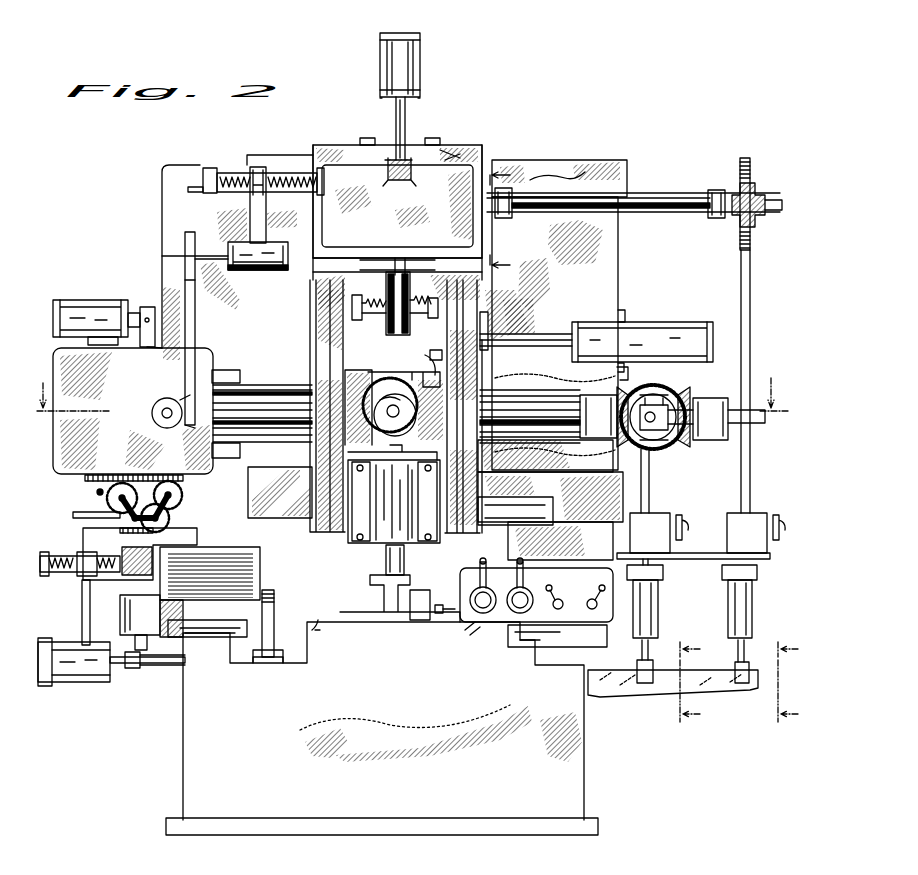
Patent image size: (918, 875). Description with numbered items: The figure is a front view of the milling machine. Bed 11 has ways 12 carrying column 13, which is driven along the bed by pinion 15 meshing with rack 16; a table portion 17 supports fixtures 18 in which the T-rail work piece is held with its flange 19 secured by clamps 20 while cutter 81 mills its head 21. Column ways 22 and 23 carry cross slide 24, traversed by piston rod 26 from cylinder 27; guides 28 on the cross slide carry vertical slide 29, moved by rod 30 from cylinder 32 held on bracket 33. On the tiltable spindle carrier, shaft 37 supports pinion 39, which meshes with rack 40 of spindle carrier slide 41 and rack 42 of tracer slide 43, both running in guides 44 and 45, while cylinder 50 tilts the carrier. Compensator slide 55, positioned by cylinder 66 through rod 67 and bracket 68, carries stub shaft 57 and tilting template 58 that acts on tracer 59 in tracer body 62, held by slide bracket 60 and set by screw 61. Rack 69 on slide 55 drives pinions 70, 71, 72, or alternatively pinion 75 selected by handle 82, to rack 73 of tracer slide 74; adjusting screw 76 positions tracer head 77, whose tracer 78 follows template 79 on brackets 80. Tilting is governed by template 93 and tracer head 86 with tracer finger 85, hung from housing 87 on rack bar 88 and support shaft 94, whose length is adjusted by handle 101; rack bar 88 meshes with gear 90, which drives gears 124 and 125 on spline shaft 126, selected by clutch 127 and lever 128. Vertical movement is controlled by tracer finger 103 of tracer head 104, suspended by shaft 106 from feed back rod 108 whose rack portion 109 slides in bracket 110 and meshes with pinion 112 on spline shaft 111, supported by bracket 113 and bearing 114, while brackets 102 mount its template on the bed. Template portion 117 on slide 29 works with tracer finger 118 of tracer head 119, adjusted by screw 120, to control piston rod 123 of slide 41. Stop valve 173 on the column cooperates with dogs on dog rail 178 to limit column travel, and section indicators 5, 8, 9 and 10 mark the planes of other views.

The section line 5- 5 is at (413, 410).
The section line 8- 8 is at (680, 682).
The section line 9- 9 is at (779, 682).
The section line 10- 10 is at (501, 201).
The bed 11 is at (190, 776).
The ways 12 is at (222, 635).
The column 13 is at (162, 220).
The pinion 15 is at (262, 598).
The rack 16 is at (275, 609).
The table portion 17 is at (320, 617).
The work holding clamps or fixtures 18 is at (412, 591).
The vertically held flange 19 is at (370, 583).
The clamps 20 is at (455, 600).
The cross flange or head 21 is at (380, 546).
The ways 22 is at (585, 162).
The ways 23 is at (252, 508).
The carriage or cross head unit 24 is at (315, 284).
The piston rod 26 is at (546, 334).
The cylinder 27 is at (650, 322).
The vertical guides or ways 28 is at (360, 145).
The vertical slide 29 is at (450, 148).
The rod 30 is at (405, 115).
The cylinder 32 is at (420, 58).
The bracket 33 is at (378, 113).
The shaft 37 is at (395, 415).
The pinion 39 is at (381, 405).
The rack 40 is at (413, 372).
The spindle carrier slide 41 is at (347, 544).
The rack 42 is at (368, 380).
The tracer slide 43 is at (358, 282).
The ways or guides 44 is at (330, 306).
The ways or guides 45 is at (476, 306).
The cylinder 50 is at (560, 485).
The compensator slide 55 is at (208, 350).
The spindle or stub shaft 57 is at (157, 406).
The angularly adjustable template 58 is at (162, 256).
The tracer 59 is at (221, 266).
The slide bracket 60 is at (252, 214).
The screw 61 is at (228, 174).
The tracer body 62 is at (284, 254).
The cylinder 66 is at (107, 297).
The rod 67 is at (135, 310).
The bracket 68 is at (147, 347).
The rack 69 is at (188, 477).
The pinion 70 is at (180, 493).
The pinion 71 is at (168, 517).
The pinion 72 is at (138, 477).
The rack 73 is at (140, 554).
The tracer slide 74 is at (91, 578).
The pinion 75 is at (97, 493).
The adjusting screw 76 is at (70, 580).
The tracer head 77 is at (80, 680).
The tracer 78 is at (127, 671).
The transverse movement control template 79 is at (134, 668).
The brackets 80 is at (168, 668).
The cutter 81 is at (406, 562).
The handle 82 is at (76, 520).
The tracer finger 85 is at (640, 660).
The tracer head 86 is at (658, 596).
The housing 87 is at (735, 534).
The rack bar 88 is at (648, 500).
The gear 90 is at (666, 388).
The template 93 is at (646, 688).
The support shaft 94 is at (648, 566).
The handle 101 is at (744, 582).
The brackets 102 is at (723, 688).
The tracer finger 103 is at (748, 650).
The tracer head 104 is at (756, 604).
The shaft 106 is at (750, 566).
The feed back rod 108 is at (752, 493).
The rack portion 109 is at (752, 166).
The bracket 110 is at (766, 192).
The spline shaft 111 is at (784, 206).
The pinion 112 is at (730, 217).
The bracket 113 is at (714, 188).
The bearing 114 is at (506, 212).
The template portion 117 is at (343, 238).
The tracer finger 118 is at (388, 250).
The tracer head 119 is at (403, 325).
The adjusting screw 120 is at (376, 312).
The piston rod 123 is at (427, 354).
The gear 124 is at (688, 396).
The gear 125 is at (615, 378).
The spline shaft 126 is at (758, 425).
The intermediate clutch 127 is at (655, 450).
The clutch shifting lever 128 is at (668, 442).
The stop valve 173 is at (128, 609).
The dog rail 178 is at (134, 635).